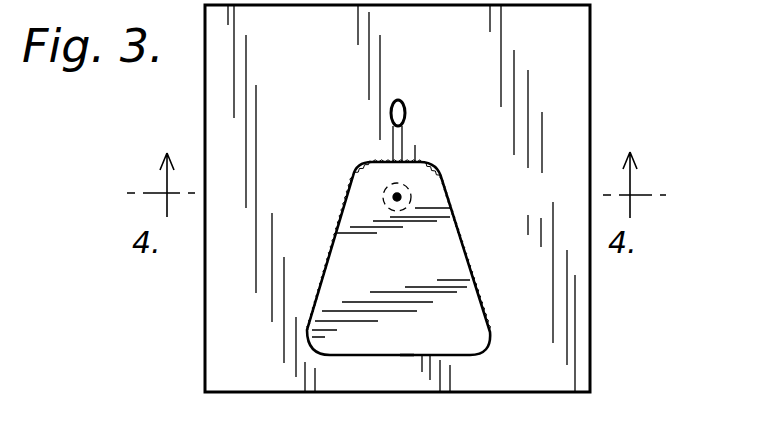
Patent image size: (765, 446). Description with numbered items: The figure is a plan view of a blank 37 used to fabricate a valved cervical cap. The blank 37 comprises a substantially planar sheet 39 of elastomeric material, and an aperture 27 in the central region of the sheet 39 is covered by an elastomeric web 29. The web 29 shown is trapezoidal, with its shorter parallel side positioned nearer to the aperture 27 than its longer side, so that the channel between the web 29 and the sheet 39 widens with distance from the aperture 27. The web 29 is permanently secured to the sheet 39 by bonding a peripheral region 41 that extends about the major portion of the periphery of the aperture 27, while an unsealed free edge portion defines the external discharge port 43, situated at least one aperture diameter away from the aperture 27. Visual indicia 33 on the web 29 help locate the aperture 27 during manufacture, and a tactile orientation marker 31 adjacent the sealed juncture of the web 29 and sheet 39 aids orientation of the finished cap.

The aperture 27 is at (378, 198).
The elastomeric web 29 is at (442, 257).
The tactile orientation marker 31 is at (403, 103).
The visual indicia 33 is at (394, 203).
The blank 37 is at (607, 56).
The planar sheet 39 is at (572, 312).
The bonded peripheral region 41 is at (455, 205).
The discharge port 43 is at (407, 356).